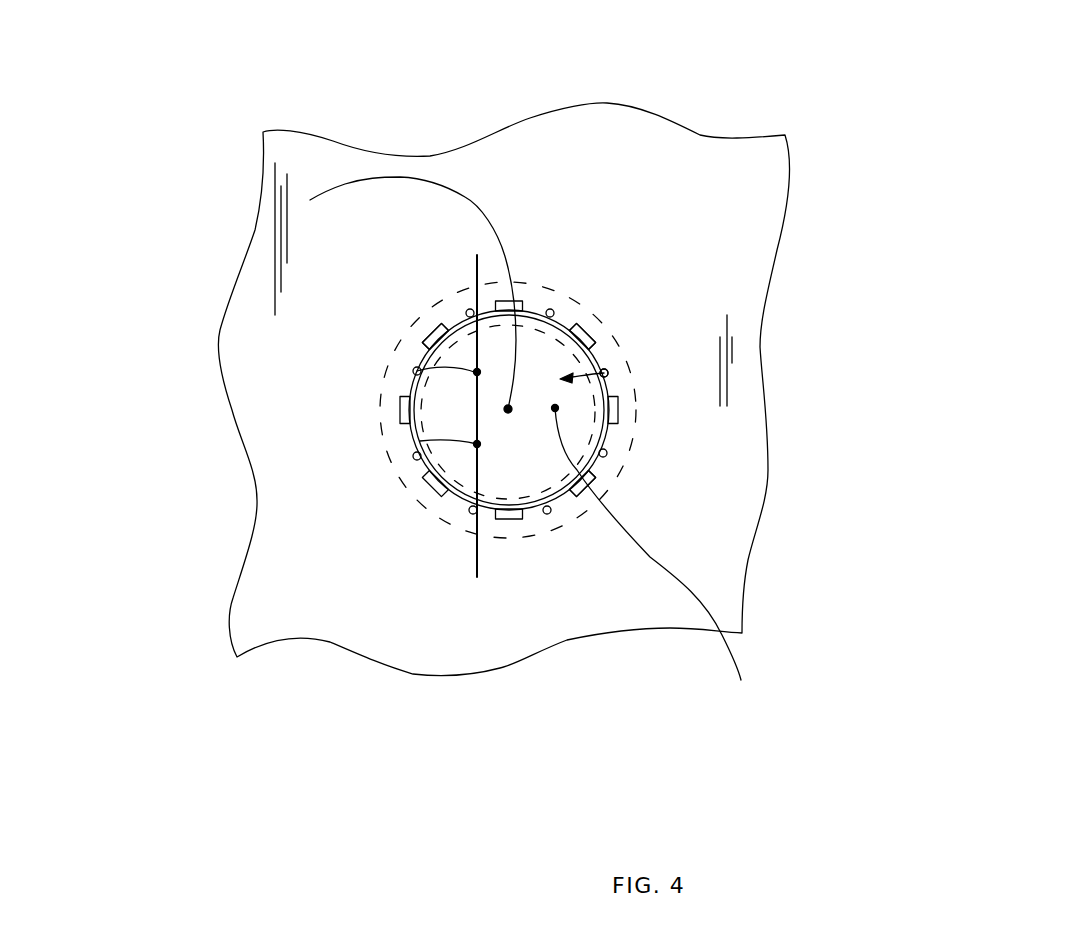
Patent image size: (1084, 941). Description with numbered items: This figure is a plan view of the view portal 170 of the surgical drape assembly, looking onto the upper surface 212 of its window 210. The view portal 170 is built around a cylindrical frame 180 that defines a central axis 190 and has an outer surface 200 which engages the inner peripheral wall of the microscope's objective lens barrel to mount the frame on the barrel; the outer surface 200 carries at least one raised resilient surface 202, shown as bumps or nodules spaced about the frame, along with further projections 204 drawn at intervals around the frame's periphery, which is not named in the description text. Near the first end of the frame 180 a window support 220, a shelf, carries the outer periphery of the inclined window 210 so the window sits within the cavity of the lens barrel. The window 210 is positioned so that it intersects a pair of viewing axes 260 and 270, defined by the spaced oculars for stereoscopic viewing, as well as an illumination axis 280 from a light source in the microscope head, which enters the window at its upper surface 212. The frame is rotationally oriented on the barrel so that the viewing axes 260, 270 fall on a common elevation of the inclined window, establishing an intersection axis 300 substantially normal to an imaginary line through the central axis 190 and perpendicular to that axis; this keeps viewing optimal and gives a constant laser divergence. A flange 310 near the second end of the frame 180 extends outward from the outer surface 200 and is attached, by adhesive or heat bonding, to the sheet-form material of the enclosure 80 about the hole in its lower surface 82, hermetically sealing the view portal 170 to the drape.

The enclosure 80 is at (798, 148).
The lower surface 82 is at (745, 210).
The view portal 170 is at (201, 67).
The cylindrical frame 180 is at (414, 475).
The central axis 190 is at (310, 200).
The outer surface 200 is at (592, 354).
The raised resilient surface 202 is at (553, 311).
The tabs 204 is at (588, 333).
The window 210 is at (604, 373).
The upper surface 212 is at (529, 466).
The window support 220 is at (590, 482).
The viewing axis 260 is at (420, 441).
The viewing axis 270 is at (417, 371).
The illumination axis 280 is at (666, 559).
The intersection axis 300 is at (477, 555).
The flange 310 is at (628, 462).